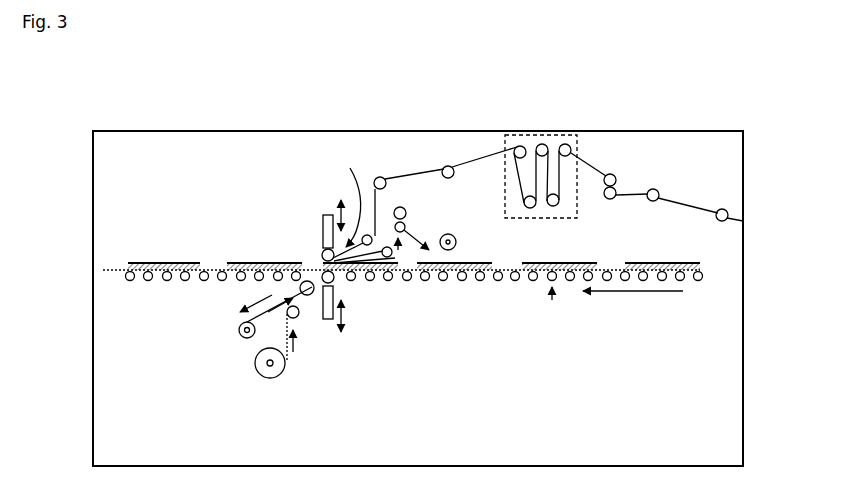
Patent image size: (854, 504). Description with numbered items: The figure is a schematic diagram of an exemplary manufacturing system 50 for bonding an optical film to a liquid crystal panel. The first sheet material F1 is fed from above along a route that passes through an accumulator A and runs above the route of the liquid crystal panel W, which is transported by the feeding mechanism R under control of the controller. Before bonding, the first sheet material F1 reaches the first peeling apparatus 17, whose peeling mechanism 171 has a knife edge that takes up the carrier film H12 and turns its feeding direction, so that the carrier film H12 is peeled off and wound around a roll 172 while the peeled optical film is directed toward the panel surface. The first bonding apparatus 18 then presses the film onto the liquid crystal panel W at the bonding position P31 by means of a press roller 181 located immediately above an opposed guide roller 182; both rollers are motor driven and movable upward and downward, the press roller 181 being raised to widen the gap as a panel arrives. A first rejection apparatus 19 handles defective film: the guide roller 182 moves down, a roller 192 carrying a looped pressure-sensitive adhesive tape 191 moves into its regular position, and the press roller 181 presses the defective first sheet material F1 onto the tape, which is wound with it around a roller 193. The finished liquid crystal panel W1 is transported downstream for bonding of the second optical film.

The thermoforming apparatus housing 50 is at (743, 353).
The first peeling apparatus 17 is at (390, 284).
The liquid crystal panel W is at (662, 265).
The liquid crystal panel W1 is at (236, 261).
The feeding mechanism R is at (552, 300).
The first sheet material F1 is at (673, 193).
The accumulator A is at (560, 208).
The first bonding apparatus 18 is at (339, 242).
The press roller 181 is at (321, 252).
The guide roller 182 is at (338, 283).
The bonding position P31 is at (355, 197).
The peeling mechanism 171 is at (383, 235).
The carrier film H12 is at (406, 240).
The roll 172 is at (457, 242).
The first rejection apparatus 19 is at (255, 351).
The pressure-sensitive adhesive tape 191 is at (272, 378).
The roller 192 is at (310, 296).
The roller 193 is at (236, 336).